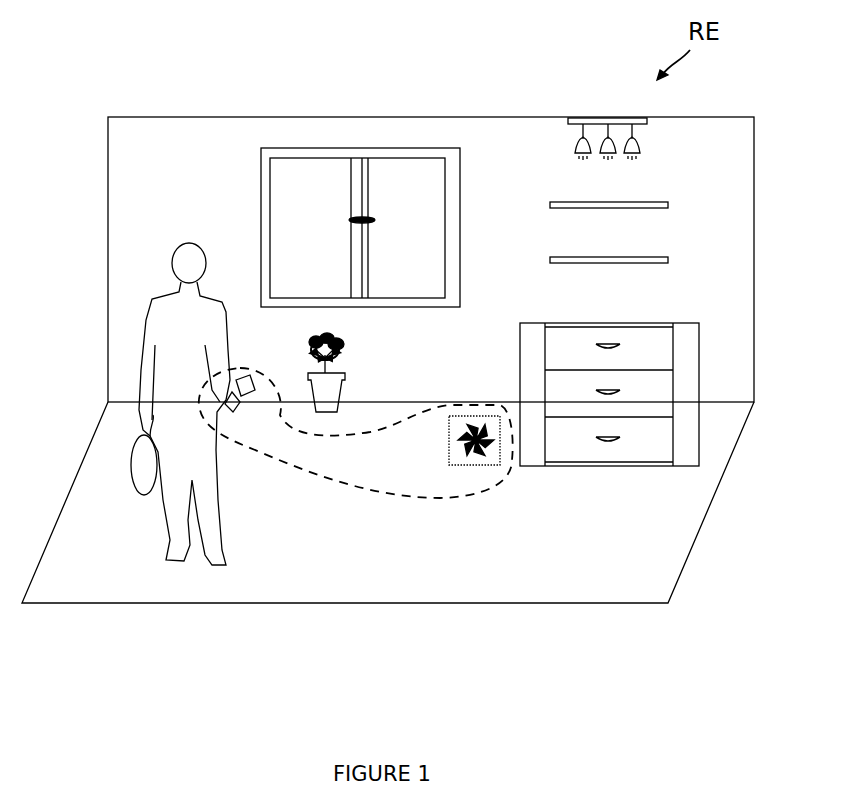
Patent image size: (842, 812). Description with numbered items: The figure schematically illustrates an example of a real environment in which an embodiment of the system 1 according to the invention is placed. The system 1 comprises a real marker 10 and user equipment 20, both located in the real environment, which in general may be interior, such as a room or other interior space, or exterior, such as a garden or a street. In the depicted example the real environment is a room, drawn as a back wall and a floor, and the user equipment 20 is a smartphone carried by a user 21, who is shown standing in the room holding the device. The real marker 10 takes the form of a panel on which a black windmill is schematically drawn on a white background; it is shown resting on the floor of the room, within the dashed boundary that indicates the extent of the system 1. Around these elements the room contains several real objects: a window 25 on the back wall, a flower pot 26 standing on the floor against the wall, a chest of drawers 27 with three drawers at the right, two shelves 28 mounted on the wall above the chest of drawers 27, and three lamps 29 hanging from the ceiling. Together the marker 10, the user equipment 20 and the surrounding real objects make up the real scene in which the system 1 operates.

The system 1 is at (355, 483).
The real marker 10 is at (470, 466).
The user equipment 20 is at (240, 405).
The user 21 is at (150, 330).
The window 25 is at (261, 181).
The flower pot 26 is at (345, 395).
The chest of drawers 27 is at (699, 381).
The shelves 28 is at (668, 208).
The lamps 29 is at (640, 147).